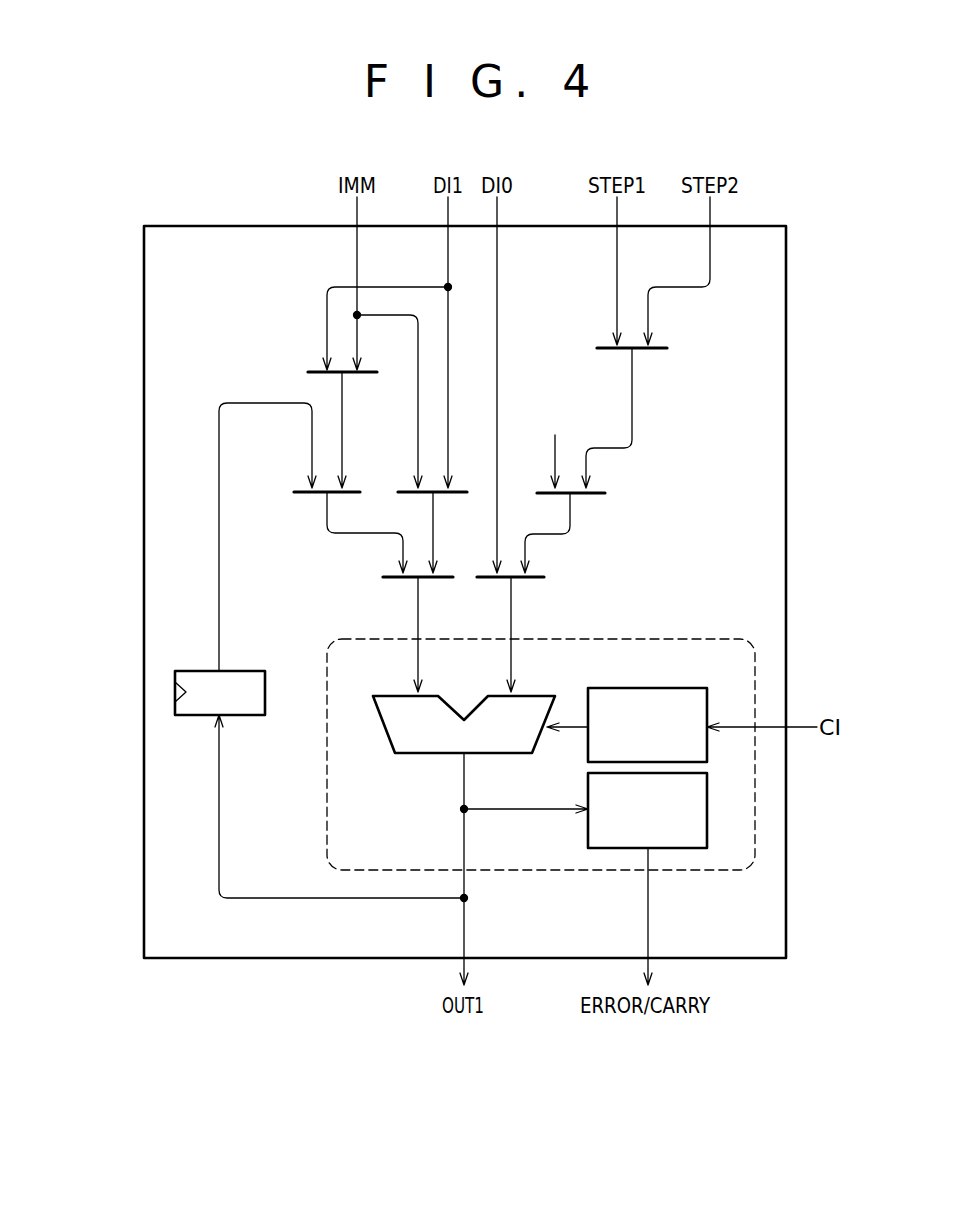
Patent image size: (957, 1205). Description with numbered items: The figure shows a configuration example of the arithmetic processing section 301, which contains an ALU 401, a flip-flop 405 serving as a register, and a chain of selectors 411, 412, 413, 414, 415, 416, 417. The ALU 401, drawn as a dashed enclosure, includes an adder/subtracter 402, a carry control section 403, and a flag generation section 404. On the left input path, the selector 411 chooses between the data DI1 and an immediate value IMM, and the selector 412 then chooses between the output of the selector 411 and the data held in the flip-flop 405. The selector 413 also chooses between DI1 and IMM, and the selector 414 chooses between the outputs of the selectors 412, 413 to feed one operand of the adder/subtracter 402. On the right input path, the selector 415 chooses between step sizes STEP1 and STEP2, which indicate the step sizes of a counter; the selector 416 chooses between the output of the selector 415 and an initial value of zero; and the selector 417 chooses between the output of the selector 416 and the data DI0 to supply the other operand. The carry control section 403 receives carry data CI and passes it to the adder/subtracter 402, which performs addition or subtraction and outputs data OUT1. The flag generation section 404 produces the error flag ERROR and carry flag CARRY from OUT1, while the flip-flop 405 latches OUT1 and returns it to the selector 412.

The arithmetic processing section 301 is at (144, 822).
The ALU 401 is at (756, 820).
The adder/subtracter 402 is at (413, 756).
The carry control section 403 is at (623, 688).
The flag generation section 404 is at (588, 828).
The flip-flop 405 is at (190, 717).
The selector 411 is at (365, 374).
The selector 412 is at (305, 498).
The selector 413 is at (420, 497).
The selector 414 is at (413, 580).
The selector 415 is at (637, 351).
The selector 416 is at (580, 497).
The selector 417 is at (520, 580).